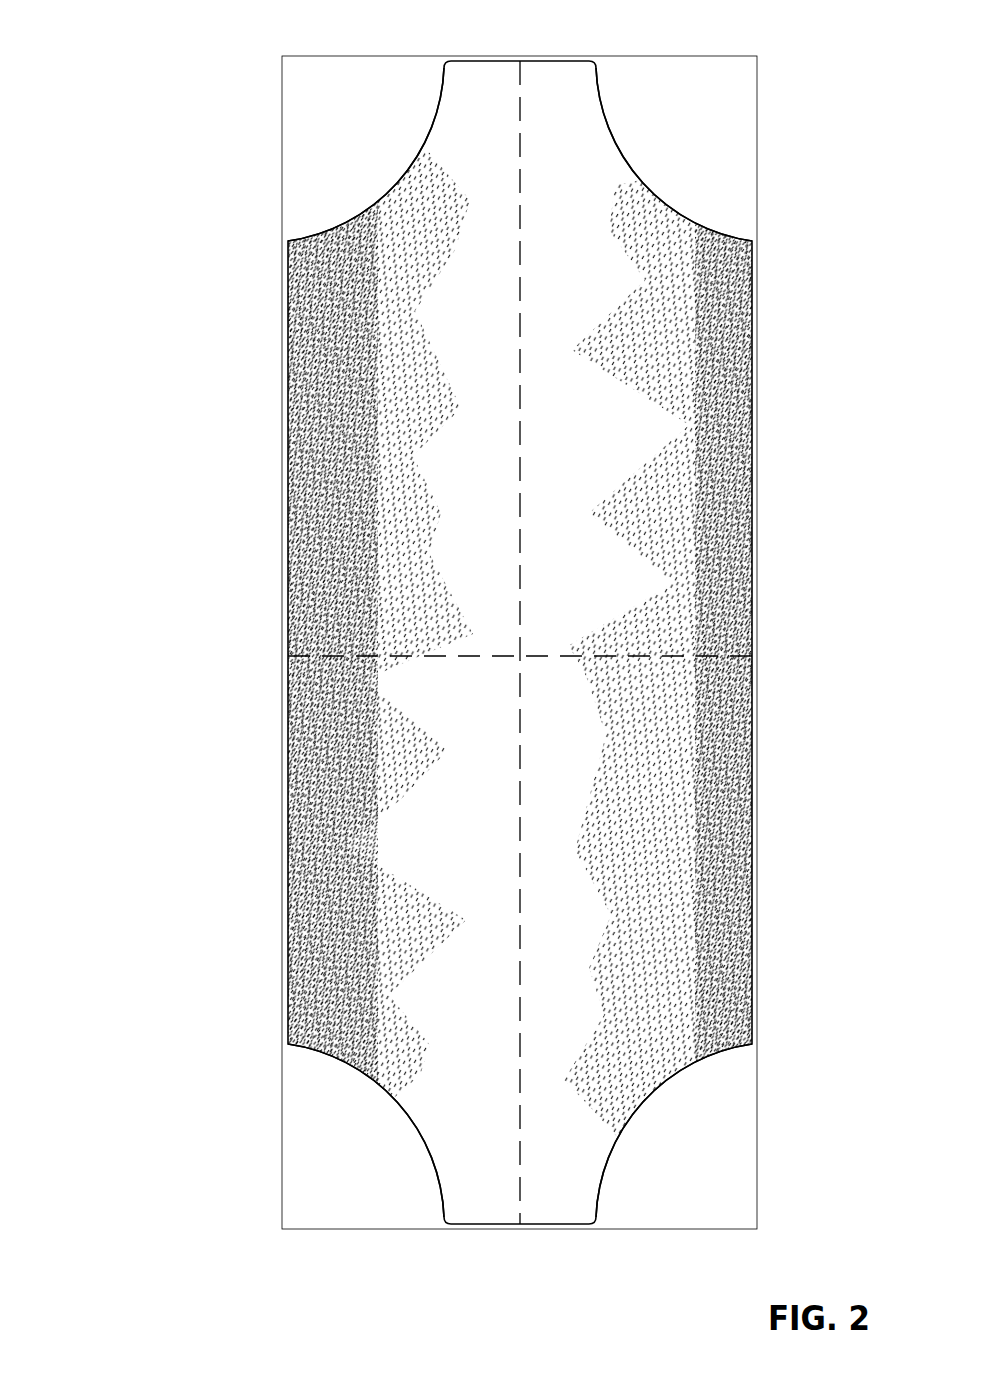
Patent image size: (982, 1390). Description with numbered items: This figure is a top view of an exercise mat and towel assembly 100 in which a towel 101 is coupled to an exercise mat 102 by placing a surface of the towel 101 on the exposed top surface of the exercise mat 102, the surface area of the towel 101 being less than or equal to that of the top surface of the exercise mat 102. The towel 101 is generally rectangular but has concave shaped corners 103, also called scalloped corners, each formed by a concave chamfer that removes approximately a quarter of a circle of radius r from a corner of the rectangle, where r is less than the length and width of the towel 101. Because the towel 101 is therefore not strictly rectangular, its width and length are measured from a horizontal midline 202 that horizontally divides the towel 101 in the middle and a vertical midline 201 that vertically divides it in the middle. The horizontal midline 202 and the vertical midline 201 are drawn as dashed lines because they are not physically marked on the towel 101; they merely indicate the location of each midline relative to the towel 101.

The exercise mat and towel assembly 100 is at (201, 347).
The towel 101 is at (525, 378).
The exercise mat 102 is at (525, 898).
The concave shaped corners 103 is at (626, 127).
The vertical midline 201 is at (534, 59).
The horizontal midline 202 is at (736, 644).